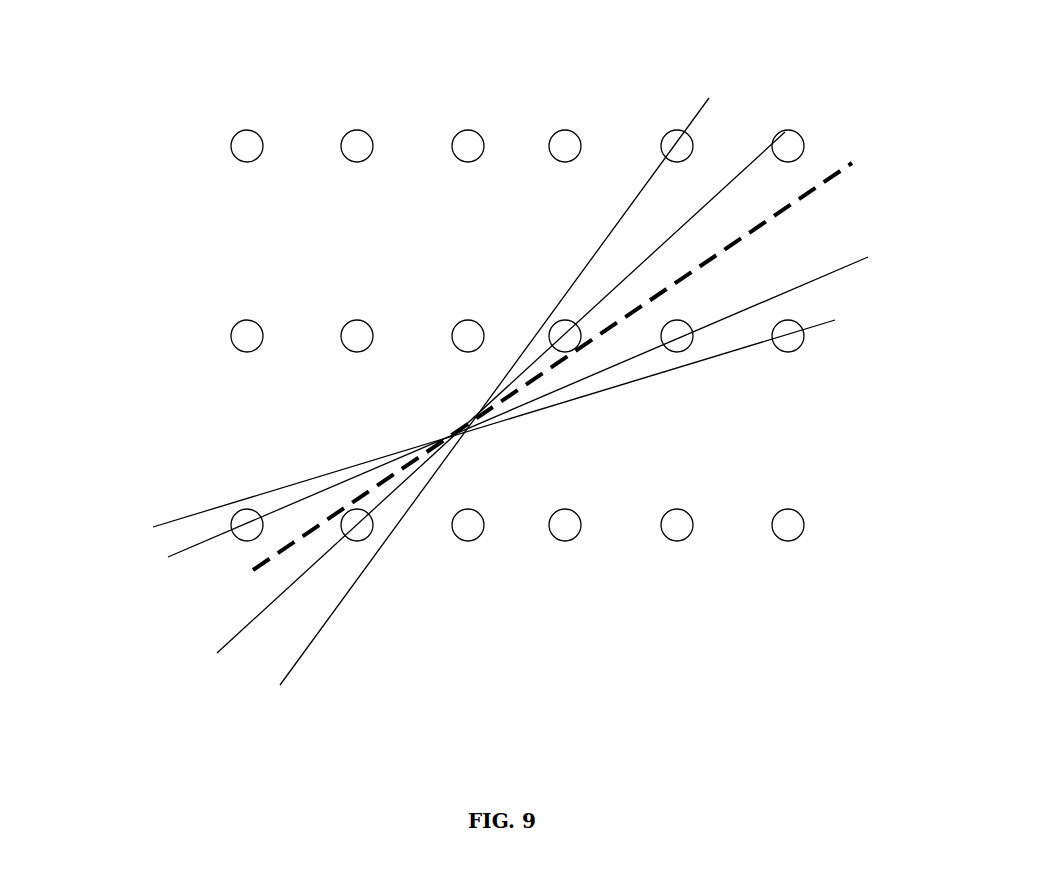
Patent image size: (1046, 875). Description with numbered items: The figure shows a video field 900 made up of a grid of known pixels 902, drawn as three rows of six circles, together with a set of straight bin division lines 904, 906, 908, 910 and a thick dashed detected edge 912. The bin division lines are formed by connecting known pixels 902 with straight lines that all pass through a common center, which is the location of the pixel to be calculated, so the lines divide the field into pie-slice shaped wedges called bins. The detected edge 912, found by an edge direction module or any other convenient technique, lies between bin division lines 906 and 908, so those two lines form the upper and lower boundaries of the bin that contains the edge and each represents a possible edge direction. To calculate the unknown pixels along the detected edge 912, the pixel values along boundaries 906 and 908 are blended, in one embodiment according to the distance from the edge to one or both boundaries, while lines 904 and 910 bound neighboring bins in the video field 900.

The video field 900 is at (790, 81).
The known pixels 902 is at (452, 146).
The bin division line 904 is at (232, 479).
The bin division line 906 is at (170, 543).
The bin division line 908 is at (248, 607).
The bin division line 910 is at (310, 635).
The detected edge 912 is at (772, 226).